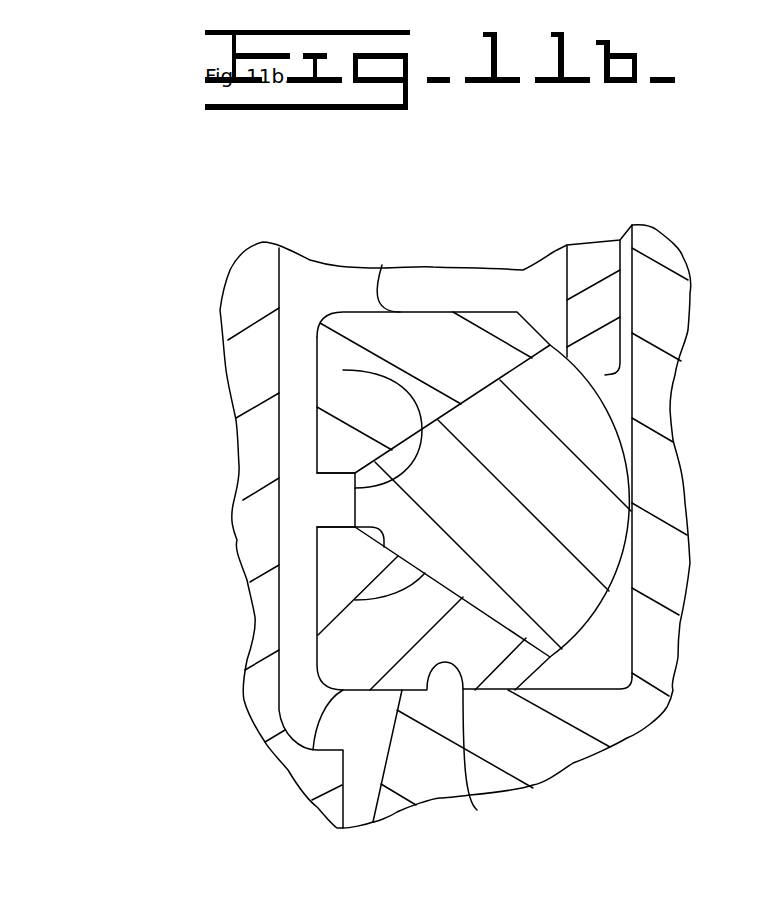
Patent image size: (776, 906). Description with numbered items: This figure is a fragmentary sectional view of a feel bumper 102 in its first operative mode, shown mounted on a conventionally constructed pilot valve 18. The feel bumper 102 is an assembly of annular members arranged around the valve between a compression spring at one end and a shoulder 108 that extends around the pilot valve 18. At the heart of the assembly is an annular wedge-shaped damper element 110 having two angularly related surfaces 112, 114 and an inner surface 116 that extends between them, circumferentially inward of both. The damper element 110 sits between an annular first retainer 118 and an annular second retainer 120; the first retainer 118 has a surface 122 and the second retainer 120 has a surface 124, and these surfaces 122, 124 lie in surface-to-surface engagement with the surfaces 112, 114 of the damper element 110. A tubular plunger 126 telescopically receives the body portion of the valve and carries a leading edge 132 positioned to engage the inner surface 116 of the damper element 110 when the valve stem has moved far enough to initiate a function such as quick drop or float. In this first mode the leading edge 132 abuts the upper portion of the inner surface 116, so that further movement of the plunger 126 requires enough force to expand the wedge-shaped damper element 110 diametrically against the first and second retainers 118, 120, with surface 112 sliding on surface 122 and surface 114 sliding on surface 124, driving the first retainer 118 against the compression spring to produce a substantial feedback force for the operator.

The pilot valve 18 is at (212, 707).
The feel bumper 102 is at (452, 288).
The shoulder 108 is at (477, 810).
The damper element 110 is at (594, 623).
The surface 112 is at (343, 370).
The surface 114 is at (355, 600).
The inner surface 116 is at (634, 440).
The first retainer 118 is at (382, 265).
The second retainer 120 is at (290, 770).
The surface 122 is at (355, 488).
The surface 124 is at (355, 519).
The tubular plunger 126 is at (603, 240).
The leading edge 132 is at (612, 374).